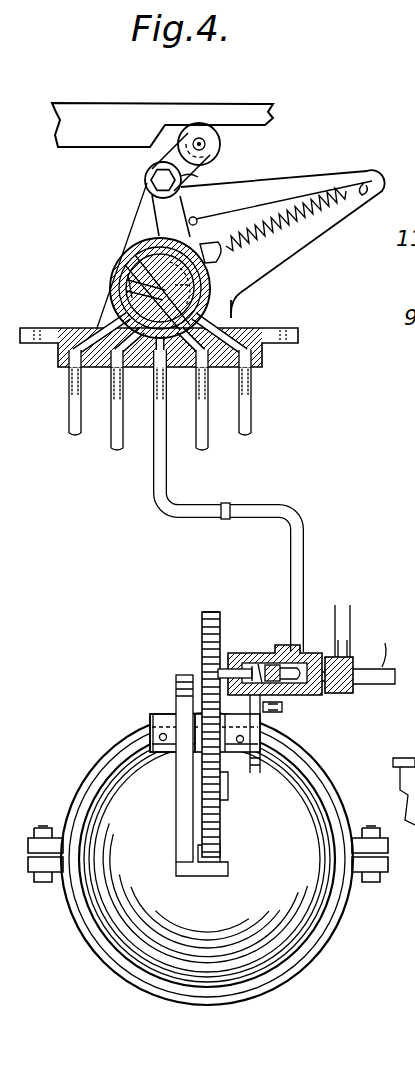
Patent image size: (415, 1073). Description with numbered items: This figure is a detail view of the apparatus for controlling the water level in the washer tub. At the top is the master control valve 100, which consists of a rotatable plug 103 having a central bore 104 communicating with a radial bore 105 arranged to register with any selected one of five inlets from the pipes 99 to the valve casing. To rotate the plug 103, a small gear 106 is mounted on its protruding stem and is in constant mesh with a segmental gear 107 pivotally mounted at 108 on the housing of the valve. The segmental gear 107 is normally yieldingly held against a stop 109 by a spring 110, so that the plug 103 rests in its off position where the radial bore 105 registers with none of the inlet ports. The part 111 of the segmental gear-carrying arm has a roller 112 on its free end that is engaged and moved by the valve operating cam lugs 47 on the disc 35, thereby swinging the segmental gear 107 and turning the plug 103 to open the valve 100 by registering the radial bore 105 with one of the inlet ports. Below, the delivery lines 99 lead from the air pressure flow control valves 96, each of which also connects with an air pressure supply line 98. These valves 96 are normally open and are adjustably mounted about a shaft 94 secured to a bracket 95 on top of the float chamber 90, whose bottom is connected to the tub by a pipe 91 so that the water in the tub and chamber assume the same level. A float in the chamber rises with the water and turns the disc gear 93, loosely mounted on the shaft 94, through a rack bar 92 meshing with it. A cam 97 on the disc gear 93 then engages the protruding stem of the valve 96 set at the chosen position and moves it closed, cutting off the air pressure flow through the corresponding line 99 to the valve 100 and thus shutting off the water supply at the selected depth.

The disc 35 is at (247, 110).
The cam lugs 47 is at (87, 132).
The roller 112 is at (212, 144).
The part of the segmental gear-carrying arm 111 is at (198, 177).
The pivot 108 is at (152, 181).
The spring 110 is at (336, 174).
The stop 109 is at (199, 219).
The segmental gear 107 is at (222, 258).
The small gear 106 is at (192, 285).
The radial bore 105 is at (133, 288).
The master control valve 100 is at (127, 300).
The central bore 104 is at (148, 282).
The rotatable plug 103 is at (232, 309).
The delivery line 99 is at (292, 557).
The disc gear 93 is at (202, 624).
The air pressure flow control valves 96 is at (258, 652).
The air pressure supply line 98 is at (343, 623).
The bracket 95 is at (152, 714).
The shaft 94 is at (150, 728).
The float chamber 90 is at (114, 760).
The pipe 91 is at (117, 807).
The cam 97 is at (223, 796).
The rack bar 92 is at (213, 865).